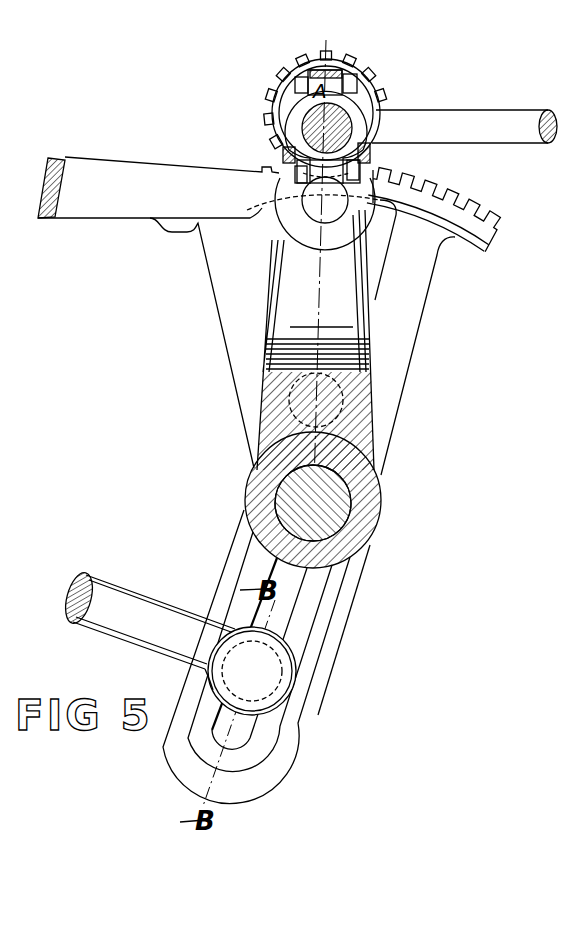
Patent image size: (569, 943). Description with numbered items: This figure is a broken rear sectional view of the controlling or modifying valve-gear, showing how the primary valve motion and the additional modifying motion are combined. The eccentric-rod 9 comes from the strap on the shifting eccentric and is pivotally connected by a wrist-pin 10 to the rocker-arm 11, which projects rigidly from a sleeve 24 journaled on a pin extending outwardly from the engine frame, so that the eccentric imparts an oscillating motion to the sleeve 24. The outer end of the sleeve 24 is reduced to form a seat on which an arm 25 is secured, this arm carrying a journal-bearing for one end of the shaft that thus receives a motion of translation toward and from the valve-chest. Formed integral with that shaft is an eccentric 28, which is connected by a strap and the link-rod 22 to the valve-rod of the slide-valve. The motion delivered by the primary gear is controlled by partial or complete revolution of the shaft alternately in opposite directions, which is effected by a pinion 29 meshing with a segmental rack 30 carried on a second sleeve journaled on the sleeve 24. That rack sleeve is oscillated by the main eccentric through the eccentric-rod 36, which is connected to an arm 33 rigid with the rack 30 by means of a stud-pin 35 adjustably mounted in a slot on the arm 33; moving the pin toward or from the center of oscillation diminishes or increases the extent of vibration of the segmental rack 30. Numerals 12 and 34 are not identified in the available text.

The eccentric-rod 9 is at (113, 163).
The wrist-pin 10 is at (318, 207).
The rocker-arm 11 is at (315, 340).
The pivot pin 12 is at (282, 493).
The link-rod 22 is at (445, 112).
The sleeve 24 is at (382, 508).
The arm 25 is at (372, 159).
The eccentric 28 is at (327, 128).
The pinion 29 is at (370, 76).
The segmental rack 30 is at (487, 228).
The arm 33 is at (325, 635).
The slot 34 is at (287, 606).
The stud-pin 35 is at (263, 680).
The eccentric-rod 36 is at (143, 610).